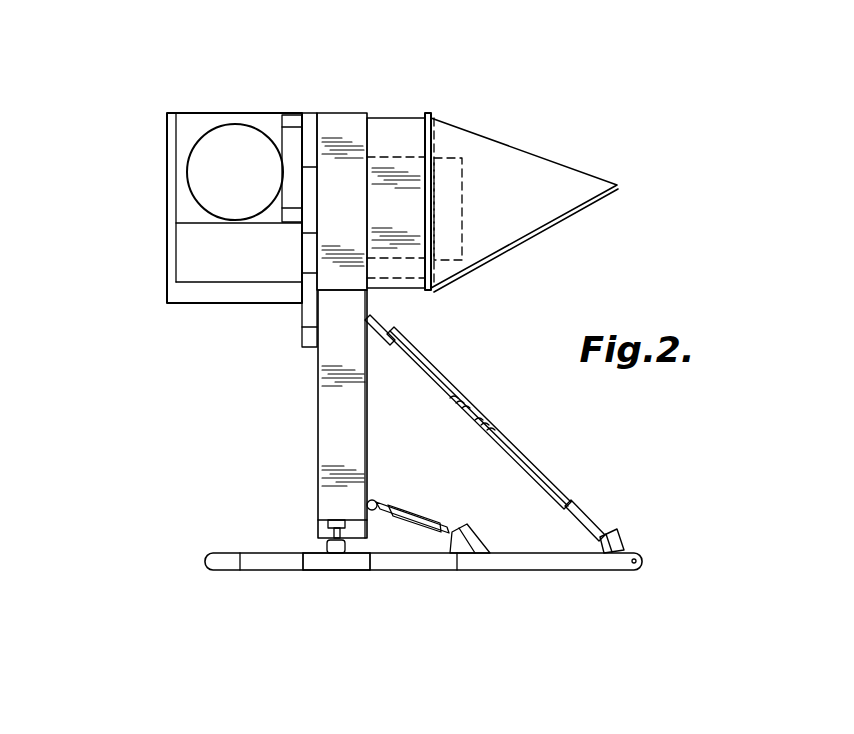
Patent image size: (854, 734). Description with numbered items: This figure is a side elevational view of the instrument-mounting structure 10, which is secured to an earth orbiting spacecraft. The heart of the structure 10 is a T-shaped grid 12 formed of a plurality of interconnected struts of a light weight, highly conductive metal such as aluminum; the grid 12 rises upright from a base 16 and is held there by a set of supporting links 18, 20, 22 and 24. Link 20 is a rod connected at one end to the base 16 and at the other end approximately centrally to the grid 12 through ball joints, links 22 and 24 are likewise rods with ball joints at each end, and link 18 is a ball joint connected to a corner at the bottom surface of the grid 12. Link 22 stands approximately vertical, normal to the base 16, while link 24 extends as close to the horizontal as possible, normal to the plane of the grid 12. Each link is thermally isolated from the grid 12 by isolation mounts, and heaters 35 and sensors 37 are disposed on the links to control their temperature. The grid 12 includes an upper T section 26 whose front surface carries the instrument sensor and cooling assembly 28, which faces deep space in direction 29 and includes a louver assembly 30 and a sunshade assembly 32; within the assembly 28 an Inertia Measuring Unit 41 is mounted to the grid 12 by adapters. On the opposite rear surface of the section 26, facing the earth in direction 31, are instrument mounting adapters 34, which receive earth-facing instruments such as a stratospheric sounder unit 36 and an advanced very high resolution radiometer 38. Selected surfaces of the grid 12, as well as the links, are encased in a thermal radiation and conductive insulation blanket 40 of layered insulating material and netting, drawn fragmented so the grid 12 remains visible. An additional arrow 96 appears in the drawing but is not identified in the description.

The structure 10 is at (387, 101).
The grid 12 is at (315, 411).
The base 16 is at (593, 571).
The supporting link 18 is at (323, 556).
The supporting link 20 is at (508, 443).
The supporting link 22 is at (327, 550).
The supporting link 24 is at (416, 510).
The upper T section 26 is at (335, 128).
The instrument sensor and cooling assembly 28 is at (519, 136).
The direction 29 is at (698, 185).
The louver assembly 30 is at (430, 292).
The direction 31 is at (29, 229).
The sunshade assembly 32 is at (563, 218).
The instrument mounting adapter 34 is at (298, 321).
The heater 35 is at (466, 398).
The stratospheric sounder unit 36 is at (165, 172).
The sensor 37 is at (484, 440).
The advanced very high resolution radiometer 38 is at (225, 184).
The insulation blanket 40 is at (350, 127).
The Inertia Measuring Unit 41 is at (450, 240).
The direction arrow 96 is at (659, 397).